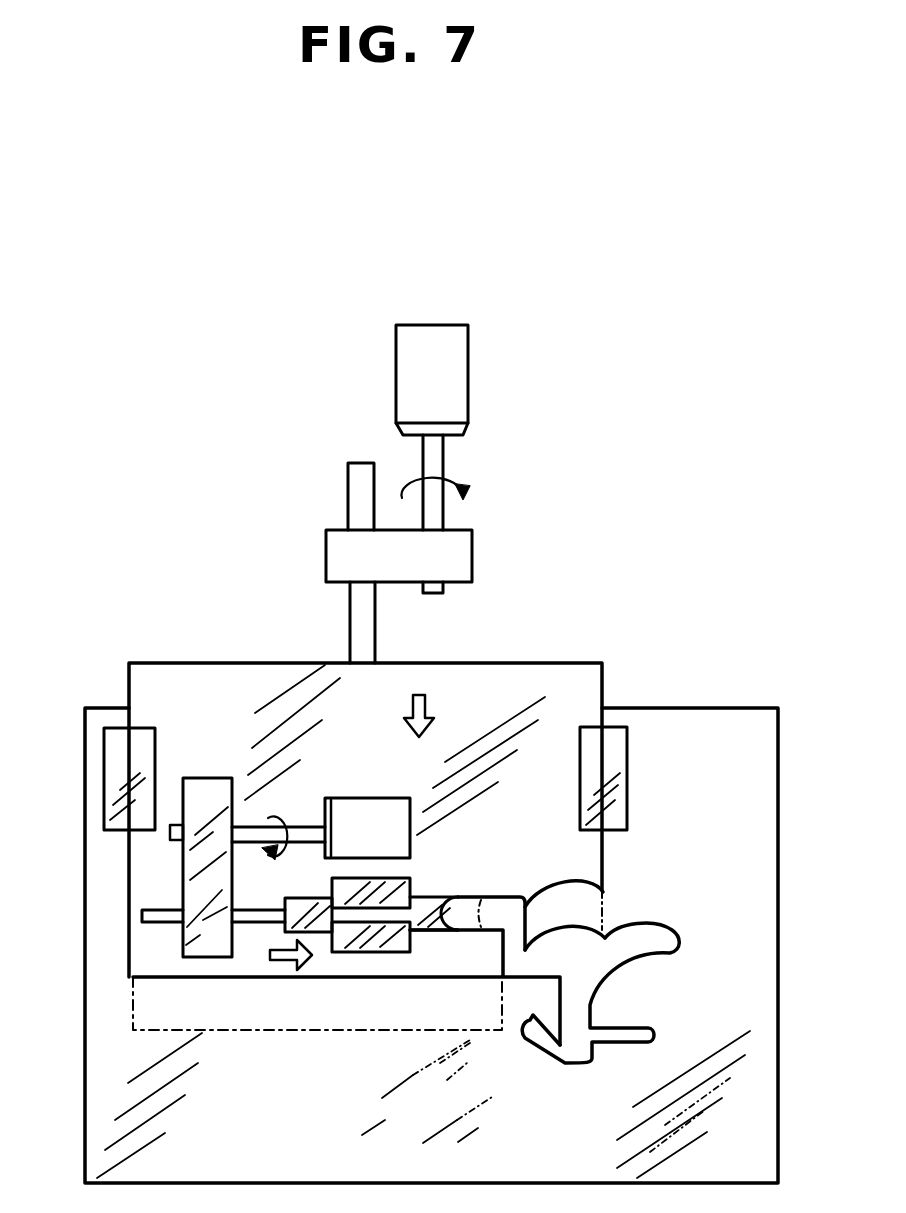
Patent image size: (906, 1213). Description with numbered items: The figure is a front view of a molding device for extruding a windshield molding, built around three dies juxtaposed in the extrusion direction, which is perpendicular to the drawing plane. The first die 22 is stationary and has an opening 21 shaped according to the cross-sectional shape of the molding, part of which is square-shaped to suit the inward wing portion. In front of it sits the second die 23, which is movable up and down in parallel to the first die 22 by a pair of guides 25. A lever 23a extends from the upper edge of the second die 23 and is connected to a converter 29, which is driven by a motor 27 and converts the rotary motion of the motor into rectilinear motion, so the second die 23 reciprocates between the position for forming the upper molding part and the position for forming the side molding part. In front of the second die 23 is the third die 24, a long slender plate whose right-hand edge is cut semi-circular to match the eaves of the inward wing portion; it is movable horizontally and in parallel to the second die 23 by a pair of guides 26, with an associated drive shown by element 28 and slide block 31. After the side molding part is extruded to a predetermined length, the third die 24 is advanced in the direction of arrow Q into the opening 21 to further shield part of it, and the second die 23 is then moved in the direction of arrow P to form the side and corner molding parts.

The opening 21 is at (577, 1004).
The first die 22 is at (755, 994).
The second die 23 is at (582, 864).
The lever 23a is at (352, 621).
The third die 24 is at (432, 920).
The guides 25 is at (122, 763).
The guides 26 is at (352, 945).
The motor 27 is at (455, 392).
The motor 28 is at (353, 822).
The converter 29 is at (455, 562).
The lead screw block 31 is at (203, 800).
The arrow P is at (425, 707).
The arrow Q is at (283, 963).